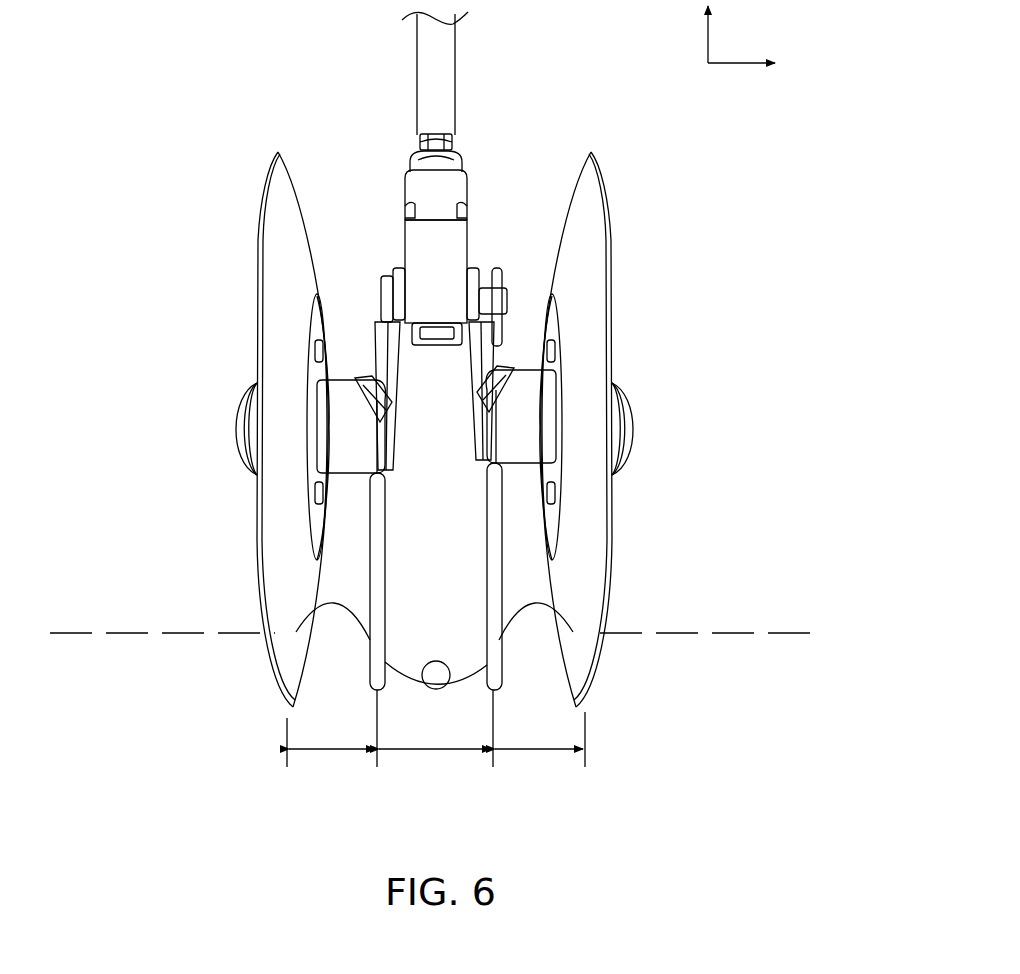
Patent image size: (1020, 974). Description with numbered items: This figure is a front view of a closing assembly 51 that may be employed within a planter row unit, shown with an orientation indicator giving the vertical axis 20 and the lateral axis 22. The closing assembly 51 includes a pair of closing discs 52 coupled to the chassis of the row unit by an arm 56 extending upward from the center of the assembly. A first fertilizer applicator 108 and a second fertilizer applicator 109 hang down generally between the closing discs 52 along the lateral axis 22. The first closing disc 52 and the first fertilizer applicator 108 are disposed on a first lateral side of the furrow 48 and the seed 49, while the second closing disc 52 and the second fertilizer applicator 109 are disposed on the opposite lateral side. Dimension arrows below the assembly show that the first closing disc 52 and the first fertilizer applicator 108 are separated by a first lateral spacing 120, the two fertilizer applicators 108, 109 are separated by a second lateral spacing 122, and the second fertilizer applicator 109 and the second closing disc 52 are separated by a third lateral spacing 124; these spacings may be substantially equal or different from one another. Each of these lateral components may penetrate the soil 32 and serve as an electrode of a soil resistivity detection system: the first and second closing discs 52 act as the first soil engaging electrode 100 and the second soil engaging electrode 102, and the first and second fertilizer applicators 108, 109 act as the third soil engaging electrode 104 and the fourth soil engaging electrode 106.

The vertical axis 20 is at (707, 40).
The lateral axis 22 is at (735, 66).
The soil 32 is at (672, 633).
The furrow 48 is at (393, 680).
The seed 49 is at (446, 664).
The closing assembly 51 is at (660, 174).
The closing discs 52 is at (436, 429).
The arm 56 is at (456, 80).
The first soil engaging electrode 100 is at (258, 332).
The second soil engaging electrode 102 is at (612, 332).
The third soil engaging electrode 104 is at (262, 602).
The fourth soil engaging electrode 106 is at (618, 594).
The first fertilizer applicator 108 is at (378, 692).
The second fertilizer applicator 109 is at (498, 690).
The first lateral spacing 120 is at (330, 752).
The second lateral spacing 122 is at (434, 752).
The third lateral spacing 124 is at (538, 752).